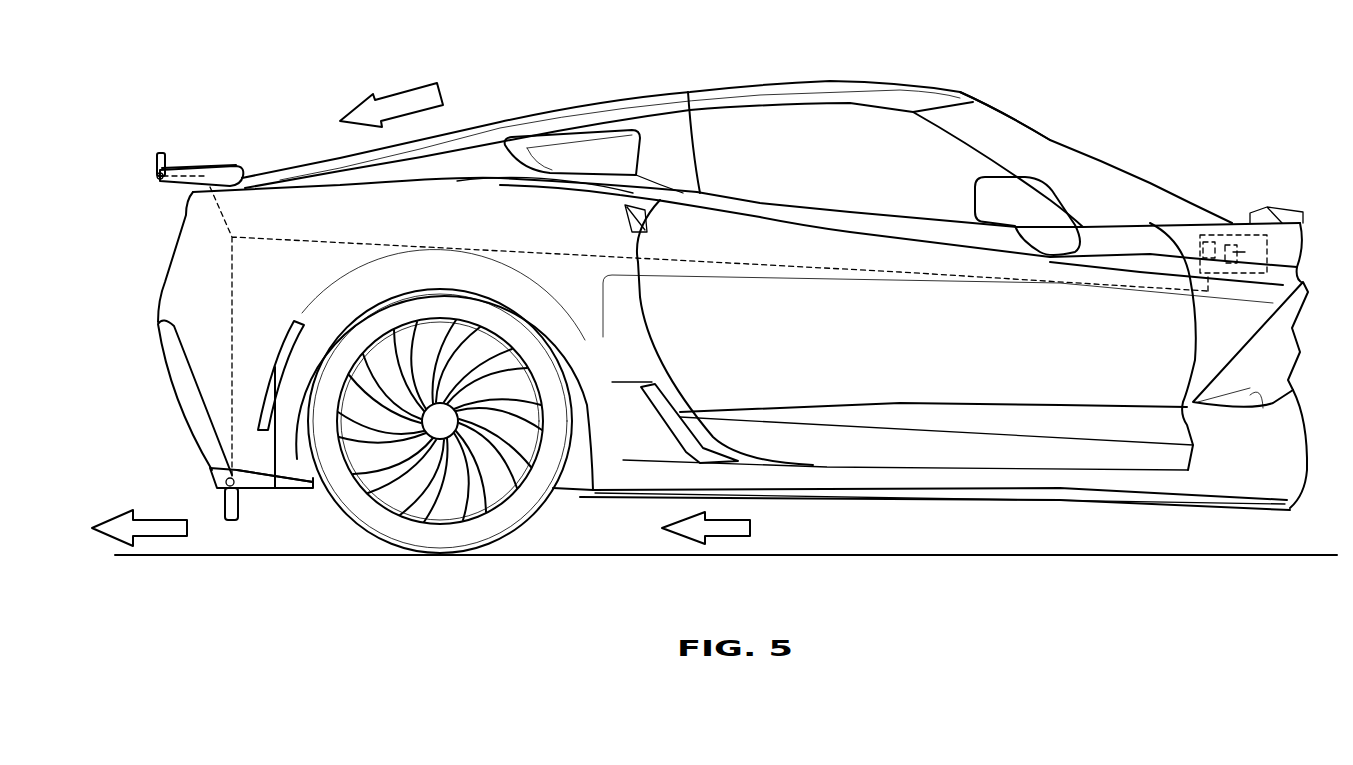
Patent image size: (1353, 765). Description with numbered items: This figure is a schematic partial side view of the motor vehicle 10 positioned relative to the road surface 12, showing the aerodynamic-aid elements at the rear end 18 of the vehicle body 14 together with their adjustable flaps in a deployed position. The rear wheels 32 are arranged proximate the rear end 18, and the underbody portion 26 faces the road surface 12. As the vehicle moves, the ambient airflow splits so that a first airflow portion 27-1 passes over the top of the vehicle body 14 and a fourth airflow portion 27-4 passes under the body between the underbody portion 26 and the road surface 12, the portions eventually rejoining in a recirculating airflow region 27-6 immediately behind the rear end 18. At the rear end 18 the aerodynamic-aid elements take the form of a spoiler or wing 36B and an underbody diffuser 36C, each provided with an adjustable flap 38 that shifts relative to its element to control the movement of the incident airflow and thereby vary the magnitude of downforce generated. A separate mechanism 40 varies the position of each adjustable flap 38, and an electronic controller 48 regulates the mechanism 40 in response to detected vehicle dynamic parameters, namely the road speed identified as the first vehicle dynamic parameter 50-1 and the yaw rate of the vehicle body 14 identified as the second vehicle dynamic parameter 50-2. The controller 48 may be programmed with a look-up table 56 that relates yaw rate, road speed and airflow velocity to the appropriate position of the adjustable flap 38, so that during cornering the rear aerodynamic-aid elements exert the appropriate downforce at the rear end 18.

The motor vehicle 10 is at (1258, 137).
The road surface 12 is at (1020, 559).
The vehicle body 14 is at (1040, 132).
The rear end 18 is at (200, 353).
The underbody portion 26 is at (793, 503).
The first airflow portion 27-1 is at (408, 88).
The fourth airflow portion 27-4 is at (723, 540).
The recirculating airflow region 27-6 is at (162, 540).
The rear wheels 32 is at (527, 500).
The spoiler or wing 36B is at (160, 180).
The underbody diffuser 36C is at (210, 476).
The adjustable flap 38 is at (156, 160).
The mechanism 40 is at (170, 168).
The electronic controller 48 is at (1264, 236).
The first vehicle dynamic parameter 50-1 is at (1212, 238).
The second vehicle dynamic parameter 50-2 is at (1200, 240).
The look-up table 56 is at (1230, 270).